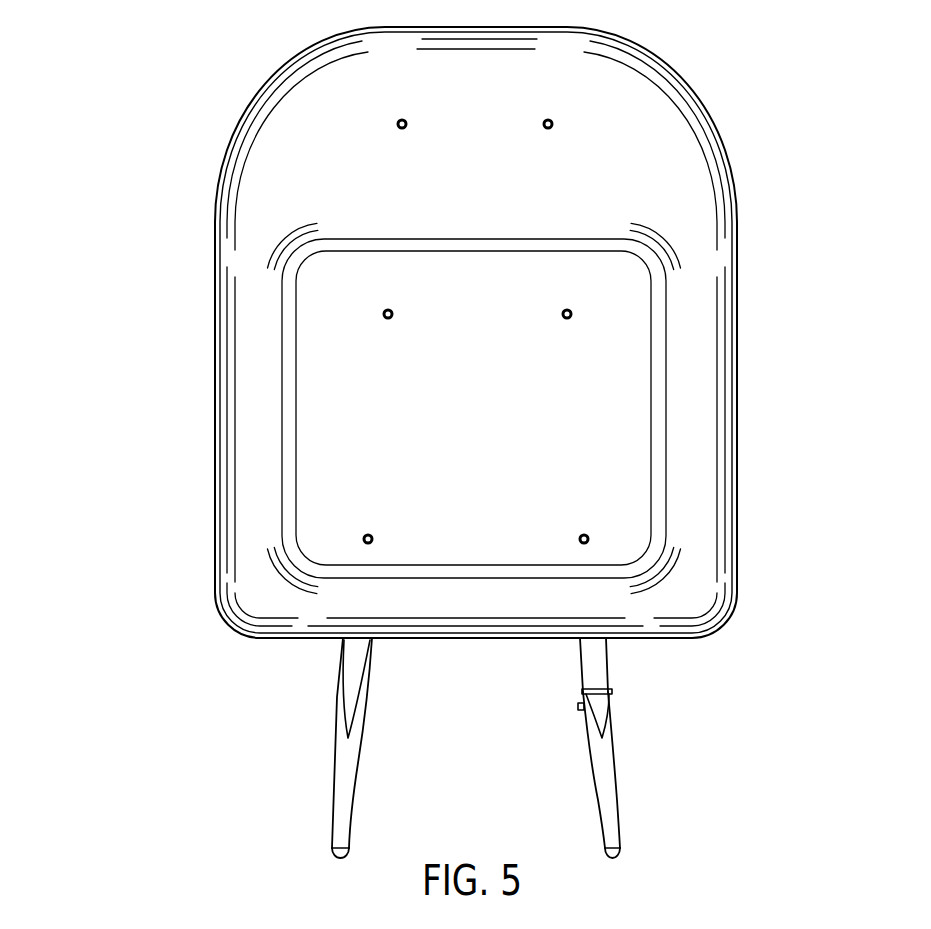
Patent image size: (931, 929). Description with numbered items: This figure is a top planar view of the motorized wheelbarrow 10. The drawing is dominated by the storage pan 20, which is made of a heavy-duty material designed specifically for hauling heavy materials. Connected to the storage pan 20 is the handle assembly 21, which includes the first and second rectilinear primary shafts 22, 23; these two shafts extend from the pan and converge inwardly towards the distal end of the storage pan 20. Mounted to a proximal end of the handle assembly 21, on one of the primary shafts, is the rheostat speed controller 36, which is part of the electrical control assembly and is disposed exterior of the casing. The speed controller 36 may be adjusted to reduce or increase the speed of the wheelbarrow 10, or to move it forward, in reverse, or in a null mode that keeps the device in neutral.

The motorized wheelbarrow 10 is at (156, 742).
The storage pan 20 is at (667, 148).
The handle assembly 21 is at (595, 662).
The first rectilinear primary shaft 22 is at (357, 680).
The second rectilinear primary shaft 23 is at (605, 745).
The rheostat speed controller 36 is at (577, 707).